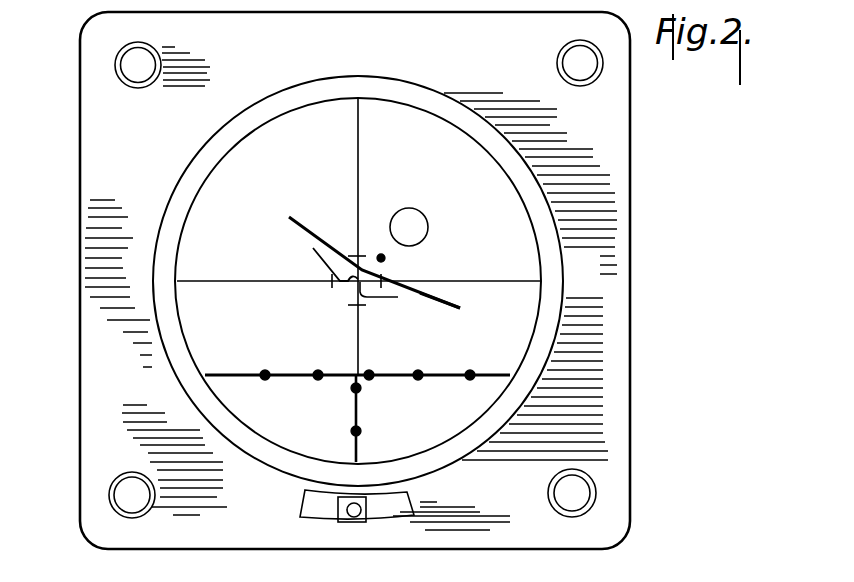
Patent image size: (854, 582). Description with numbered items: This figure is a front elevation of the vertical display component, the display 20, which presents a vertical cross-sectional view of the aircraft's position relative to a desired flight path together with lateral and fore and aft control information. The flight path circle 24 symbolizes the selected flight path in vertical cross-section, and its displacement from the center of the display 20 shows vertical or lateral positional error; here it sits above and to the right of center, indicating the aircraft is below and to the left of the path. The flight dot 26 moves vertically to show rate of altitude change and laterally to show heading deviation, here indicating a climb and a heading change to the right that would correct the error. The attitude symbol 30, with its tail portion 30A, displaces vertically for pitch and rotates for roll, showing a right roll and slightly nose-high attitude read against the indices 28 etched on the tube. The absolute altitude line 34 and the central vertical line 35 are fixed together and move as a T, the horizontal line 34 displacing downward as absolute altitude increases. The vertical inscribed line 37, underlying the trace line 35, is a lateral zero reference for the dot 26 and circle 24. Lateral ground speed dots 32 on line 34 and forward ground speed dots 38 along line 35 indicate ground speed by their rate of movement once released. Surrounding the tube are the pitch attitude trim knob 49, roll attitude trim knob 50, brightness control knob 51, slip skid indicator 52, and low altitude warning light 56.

The display 20 is at (666, 252).
The flight path circle 24 is at (429, 222).
The flight dot 26 is at (388, 260).
The indices 28 is at (354, 254).
The attitude symbol 30 is at (318, 249).
The pointer needle tail portion 30A is at (437, 307).
The lateral ground speed dots 32 is at (470, 372).
The absolute altitude line 34 is at (298, 373).
The central vertical line 35 is at (352, 413).
The vertical inscribed line 37 is at (362, 157).
The forward ground speed dots 38 is at (360, 390).
The pitch attitude trim knob 49 is at (120, 70).
The roll attitude trim knob 50 is at (598, 67).
The brightness control knob 51 is at (590, 493).
The slip skid indicator 52 is at (352, 518).
The low altitude warning light 56 is at (110, 503).